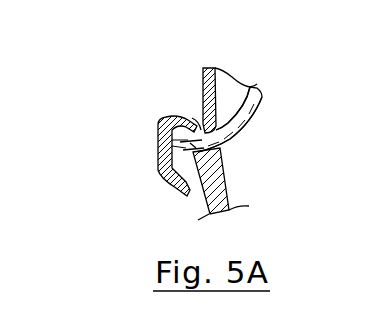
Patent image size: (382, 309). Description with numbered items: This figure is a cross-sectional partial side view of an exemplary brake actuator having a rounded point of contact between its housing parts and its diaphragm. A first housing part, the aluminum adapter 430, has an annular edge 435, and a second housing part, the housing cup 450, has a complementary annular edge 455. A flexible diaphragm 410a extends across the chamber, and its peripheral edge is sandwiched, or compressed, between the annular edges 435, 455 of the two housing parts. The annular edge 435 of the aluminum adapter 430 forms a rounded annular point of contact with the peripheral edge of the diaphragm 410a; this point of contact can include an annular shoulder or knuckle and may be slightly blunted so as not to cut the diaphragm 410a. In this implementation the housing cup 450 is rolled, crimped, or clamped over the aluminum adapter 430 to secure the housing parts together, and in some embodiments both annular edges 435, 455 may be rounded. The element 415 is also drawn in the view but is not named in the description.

The housing cup 450 is at (203, 73).
The complementary annular edge 455 is at (194, 129).
The retaining member 415 is at (184, 159).
The annular edge 435 is at (202, 148).
The flexible diaphragm 410a is at (242, 129).
The aluminum adapter 430 is at (222, 183).